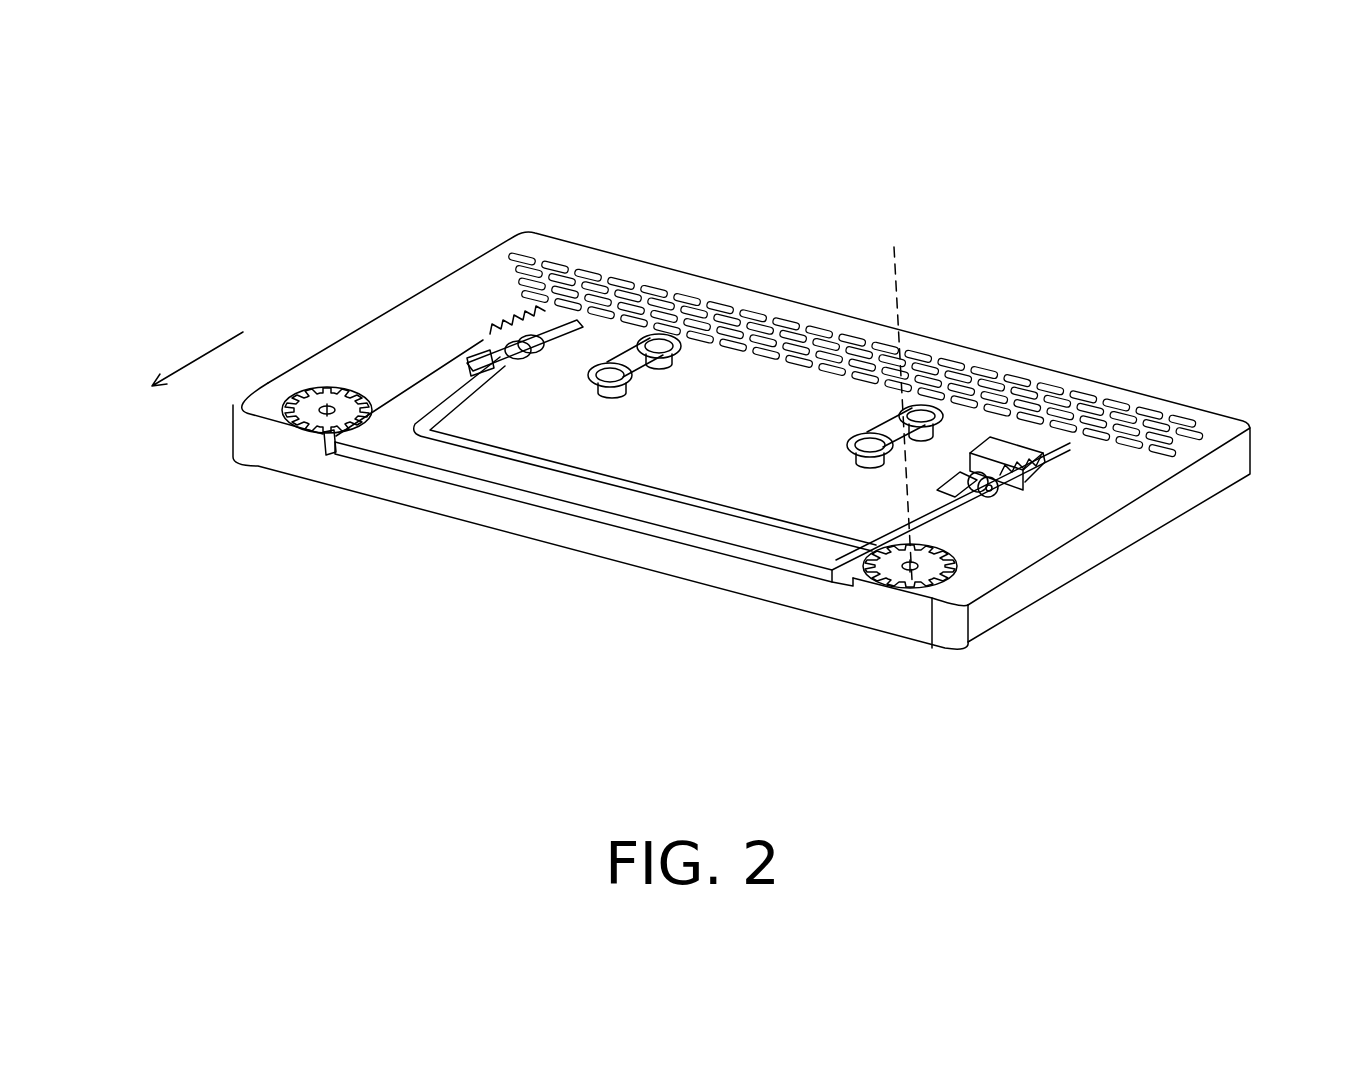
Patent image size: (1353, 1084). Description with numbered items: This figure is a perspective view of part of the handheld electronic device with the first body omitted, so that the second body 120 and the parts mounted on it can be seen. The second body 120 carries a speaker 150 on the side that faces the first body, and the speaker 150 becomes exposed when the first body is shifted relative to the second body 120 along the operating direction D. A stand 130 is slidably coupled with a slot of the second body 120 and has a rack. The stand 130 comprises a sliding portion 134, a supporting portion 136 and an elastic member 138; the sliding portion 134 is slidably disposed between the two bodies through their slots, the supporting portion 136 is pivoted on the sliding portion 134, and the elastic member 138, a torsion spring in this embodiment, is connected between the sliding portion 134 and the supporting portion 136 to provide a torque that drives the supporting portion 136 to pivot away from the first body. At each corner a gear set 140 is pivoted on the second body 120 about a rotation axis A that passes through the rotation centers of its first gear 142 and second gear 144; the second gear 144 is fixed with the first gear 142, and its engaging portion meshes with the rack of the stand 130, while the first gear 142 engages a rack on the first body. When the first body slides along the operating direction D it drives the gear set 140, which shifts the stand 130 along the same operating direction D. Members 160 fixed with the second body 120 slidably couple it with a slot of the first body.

The second body 120 is at (1244, 457).
The stand 130 is at (223, 484).
The sliding portion 134 is at (540, 332).
The supporting portion 136 is at (328, 458).
The elastic member 138 is at (985, 488).
The gear set 140 is at (112, 408).
The first gear 142 is at (305, 388).
The second gear 144 is at (300, 434).
The speaker 150 is at (1143, 410).
The members 160 is at (862, 444).
The rotation axis A is at (897, 289).
The operating direction D is at (190, 352).